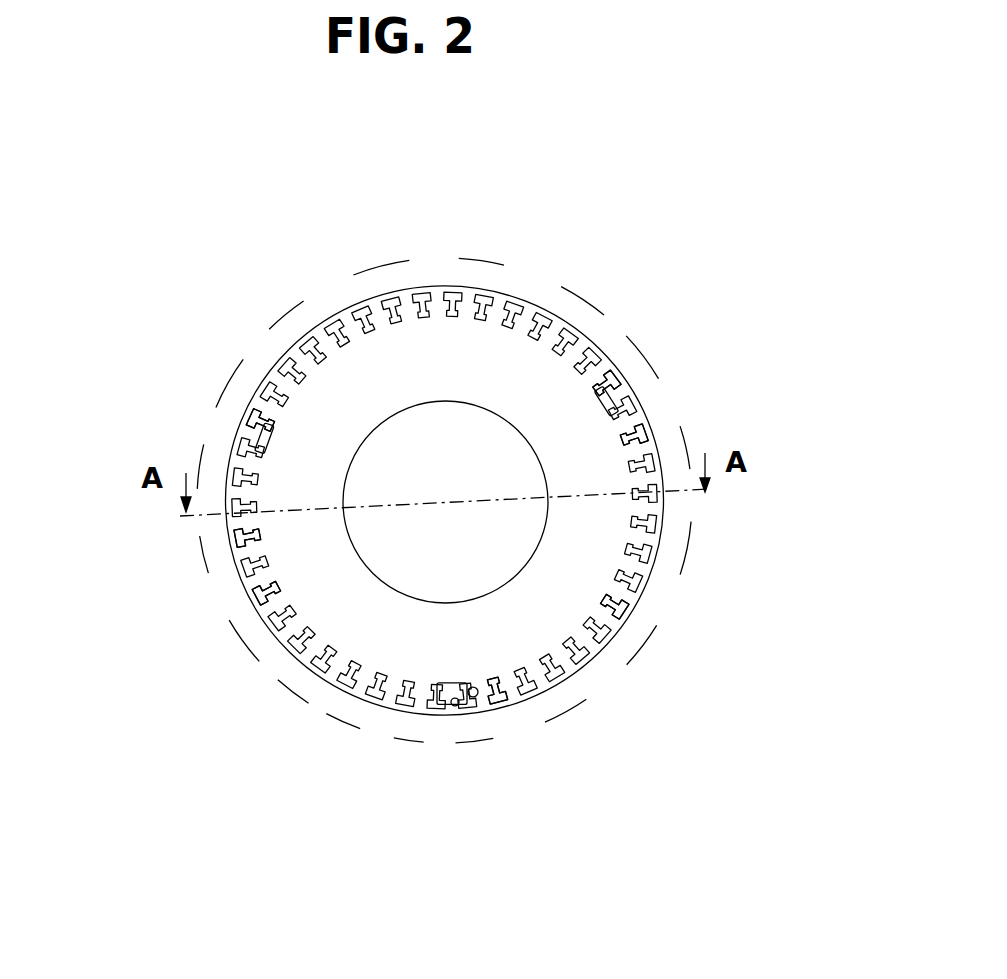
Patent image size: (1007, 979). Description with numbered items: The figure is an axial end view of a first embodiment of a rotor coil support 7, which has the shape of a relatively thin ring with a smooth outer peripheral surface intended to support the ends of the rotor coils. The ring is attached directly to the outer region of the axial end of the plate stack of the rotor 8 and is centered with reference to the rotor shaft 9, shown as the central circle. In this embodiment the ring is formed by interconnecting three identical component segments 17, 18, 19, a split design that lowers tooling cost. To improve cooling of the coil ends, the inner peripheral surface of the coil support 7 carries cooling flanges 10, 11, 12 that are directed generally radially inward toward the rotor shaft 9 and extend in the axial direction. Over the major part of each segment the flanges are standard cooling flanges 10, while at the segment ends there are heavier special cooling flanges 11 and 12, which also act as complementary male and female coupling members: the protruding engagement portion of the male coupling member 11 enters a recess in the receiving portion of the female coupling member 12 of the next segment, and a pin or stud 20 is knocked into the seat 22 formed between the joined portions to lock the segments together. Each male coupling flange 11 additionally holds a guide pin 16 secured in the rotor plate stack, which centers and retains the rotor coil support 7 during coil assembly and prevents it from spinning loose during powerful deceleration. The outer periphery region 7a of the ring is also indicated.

The rotor coil support 7 is at (300, 321).
The outer periphery of core 7a is at (647, 417).
The rotor 8 is at (233, 370).
The rotor shaft 9 is at (547, 490).
The standard cooling flanges 10 is at (242, 542).
The special cooling flange (male coupling member) 11 is at (492, 698).
The special cooling flange (female coupling member) 12 is at (270, 394).
The guide pin 16 is at (473, 697).
The component segment 17 is at (258, 613).
The component segment 18 is at (632, 613).
The component segment 19 is at (542, 308).
The pin or stud 20 is at (453, 706).
The seat 22 is at (620, 387).